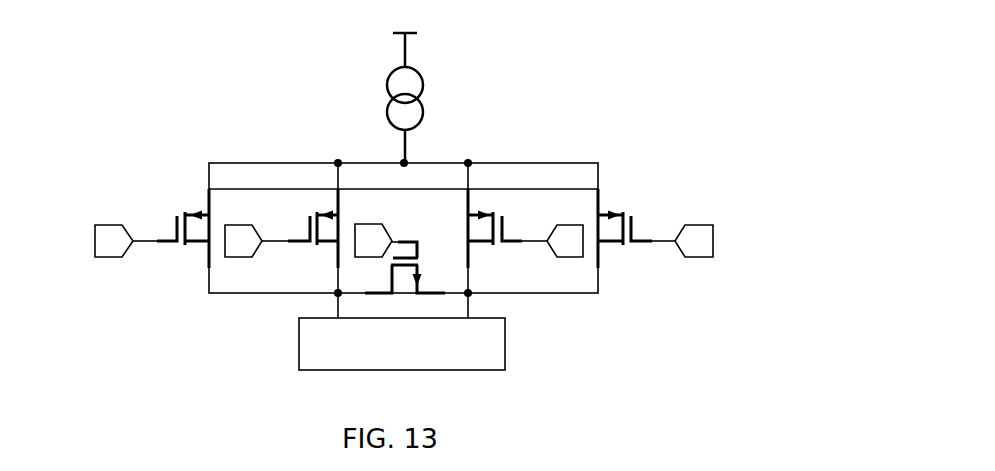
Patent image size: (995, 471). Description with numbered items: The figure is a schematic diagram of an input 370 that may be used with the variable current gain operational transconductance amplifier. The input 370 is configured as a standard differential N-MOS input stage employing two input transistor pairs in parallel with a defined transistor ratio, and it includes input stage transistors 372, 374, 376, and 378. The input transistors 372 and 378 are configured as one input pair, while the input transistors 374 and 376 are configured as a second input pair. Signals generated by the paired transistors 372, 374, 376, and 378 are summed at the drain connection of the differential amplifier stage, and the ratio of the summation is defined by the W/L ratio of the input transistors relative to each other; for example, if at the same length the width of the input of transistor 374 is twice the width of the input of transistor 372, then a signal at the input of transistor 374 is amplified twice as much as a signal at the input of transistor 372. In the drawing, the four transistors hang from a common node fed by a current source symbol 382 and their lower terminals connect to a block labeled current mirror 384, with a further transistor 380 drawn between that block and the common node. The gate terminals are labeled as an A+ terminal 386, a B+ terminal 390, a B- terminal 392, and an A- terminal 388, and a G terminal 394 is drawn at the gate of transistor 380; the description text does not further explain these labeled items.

The input 370 is at (581, 55).
The input stage transistor 372 is at (189, 213).
The input stage transistor 374 is at (327, 212).
The input stage transistor 376 is at (494, 213).
The input stage transistor 378 is at (624, 213).
The transistor 380 is at (418, 247).
The current source 382 is at (390, 68).
The current mirror 384 is at (506, 343).
The A+ input 386 is at (112, 259).
The A- input 388 is at (710, 258).
The B+ input 390 is at (241, 258).
The B- input 392 is at (563, 258).
The G input 394 is at (373, 224).